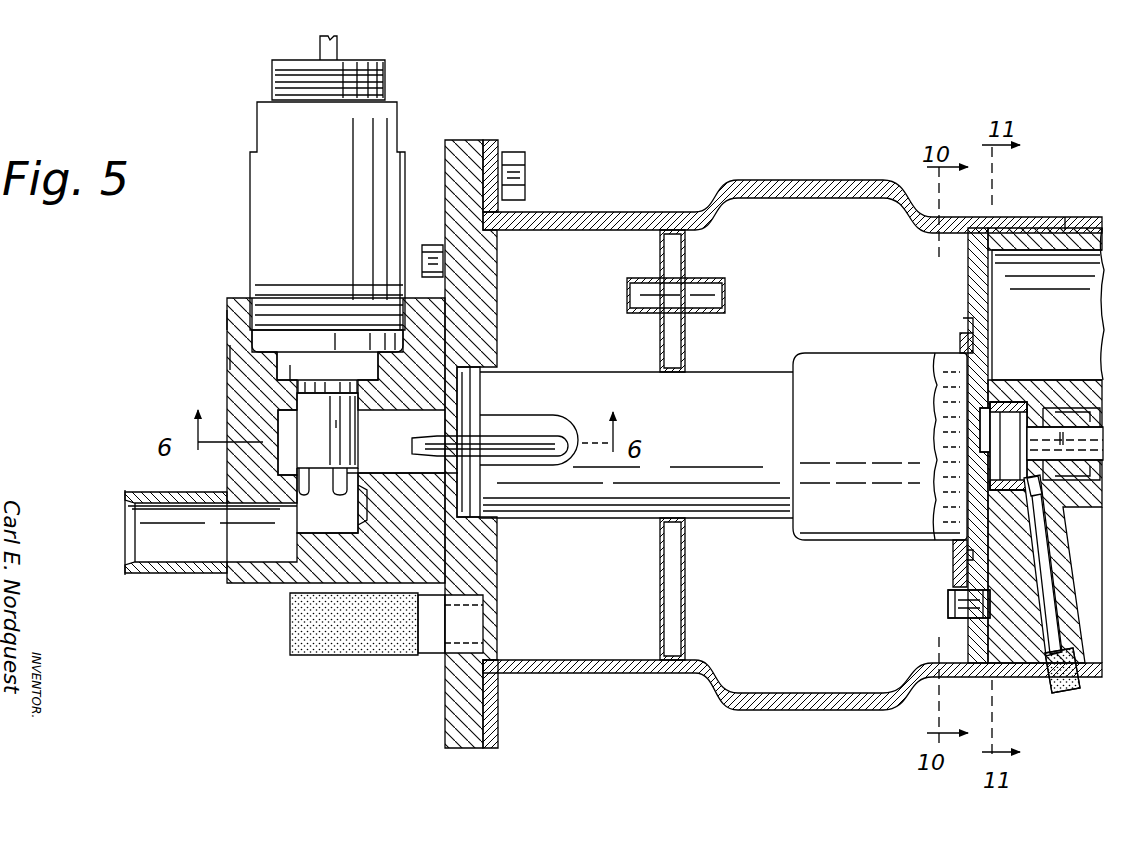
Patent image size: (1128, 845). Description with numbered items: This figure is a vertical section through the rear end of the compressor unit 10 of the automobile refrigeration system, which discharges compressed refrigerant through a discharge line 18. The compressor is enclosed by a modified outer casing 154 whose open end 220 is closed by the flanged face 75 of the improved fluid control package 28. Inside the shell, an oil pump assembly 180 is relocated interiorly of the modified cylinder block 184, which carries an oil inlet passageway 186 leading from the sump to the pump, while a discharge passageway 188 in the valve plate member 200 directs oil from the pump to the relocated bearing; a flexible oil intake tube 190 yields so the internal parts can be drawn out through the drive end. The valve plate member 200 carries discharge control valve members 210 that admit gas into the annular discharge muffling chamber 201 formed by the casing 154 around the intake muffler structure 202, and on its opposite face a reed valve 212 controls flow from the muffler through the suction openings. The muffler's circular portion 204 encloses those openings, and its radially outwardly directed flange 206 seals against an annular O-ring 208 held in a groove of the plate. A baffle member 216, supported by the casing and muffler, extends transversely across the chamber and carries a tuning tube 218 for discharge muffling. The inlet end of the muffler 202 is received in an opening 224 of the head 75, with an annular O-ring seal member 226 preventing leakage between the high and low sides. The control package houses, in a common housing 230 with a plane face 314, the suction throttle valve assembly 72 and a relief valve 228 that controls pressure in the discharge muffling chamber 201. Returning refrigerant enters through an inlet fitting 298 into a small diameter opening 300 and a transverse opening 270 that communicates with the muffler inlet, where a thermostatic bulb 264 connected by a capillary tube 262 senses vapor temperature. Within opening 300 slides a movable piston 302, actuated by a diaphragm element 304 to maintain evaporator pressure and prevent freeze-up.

The compressor unit 10 is at (1065, 217).
The discharge line 18 is at (327, 630).
The fluid control package 28 is at (227, 300).
The suction throttle valve assembly 72 is at (258, 101).
The flanged face 75 is at (460, 143).
The outer casing 154 is at (790, 197).
The oil pump assembly 180 is at (1013, 410).
The cylinder block 184 is at (1035, 237).
The oil inlet passageway 186 is at (1043, 552).
The discharge passageway 188 is at (987, 427).
The oil intake tube 190 is at (1065, 692).
The valve plate member 200 is at (977, 278).
The discharge muffling chamber 201 is at (792, 437).
The intake muffler structure 202 is at (625, 437).
The circular portion 204 is at (830, 368).
The radially outwardly directed flange 206 is at (967, 552).
The annular O-ring 208 is at (962, 338).
The discharge control valve members 210 is at (960, 570).
The reed valve 212 is at (992, 305).
The baffle member 216 is at (678, 590).
The tuning tube 218 is at (648, 313).
The open end 220 is at (495, 252).
The opening 224 is at (493, 377).
The annular O-ring seal member 226 is at (488, 503).
The relief valve 228 is at (430, 245).
The common housing 230 is at (235, 357).
The capillary tube 262 is at (428, 450).
The thermostatic bulb 264 is at (533, 440).
The transverse opening 270 is at (402, 455).
The inlet fitting 298 is at (163, 566).
The small diameter opening 300 is at (337, 515).
The movable piston 302 is at (337, 424).
The diaphragm element 304 is at (290, 370).
The plane face 314 is at (227, 318).